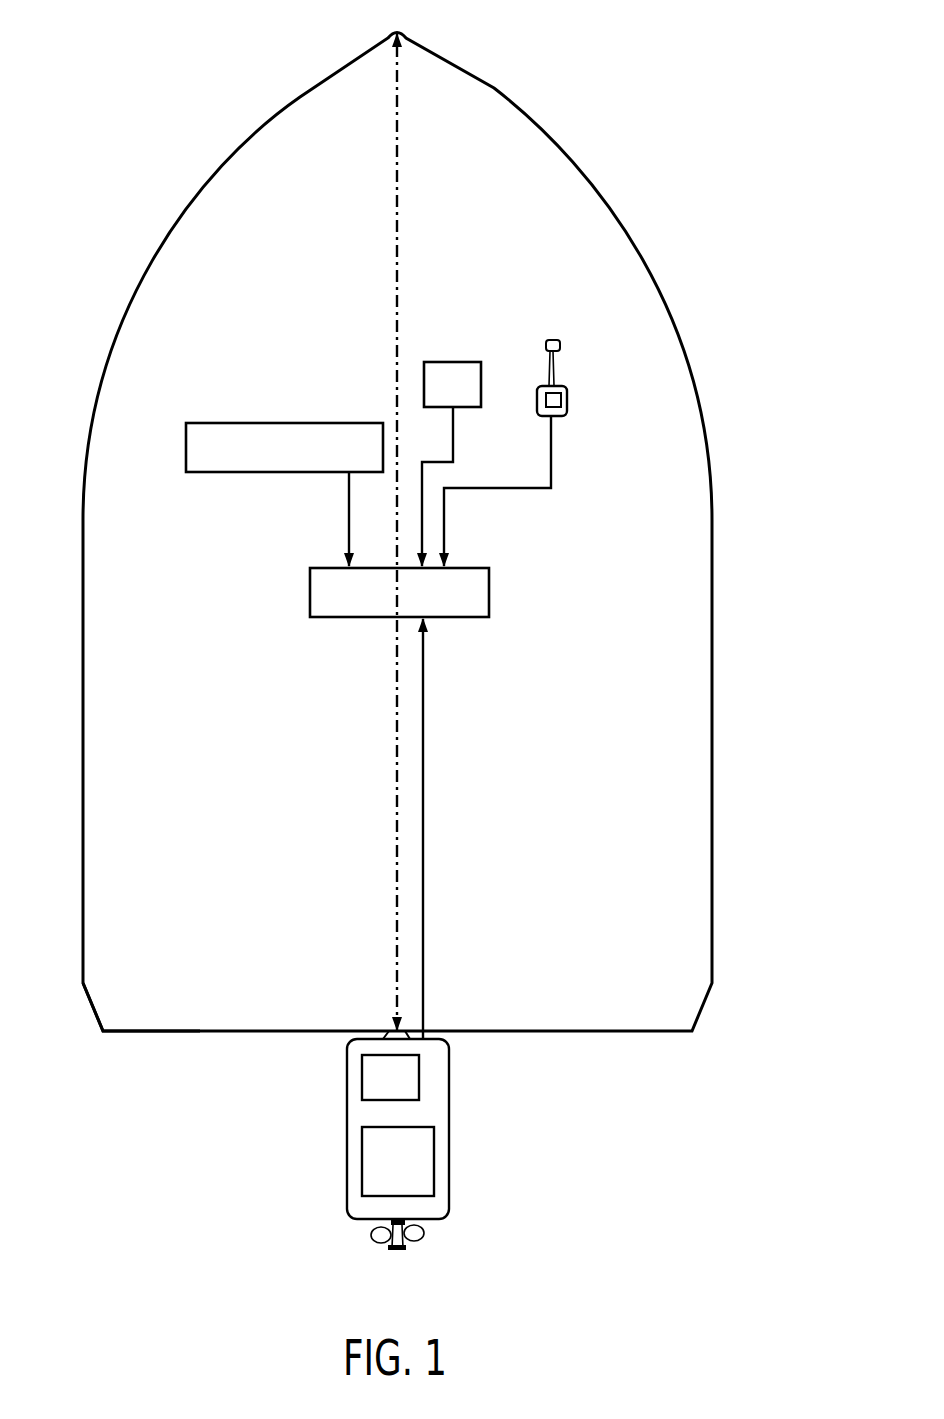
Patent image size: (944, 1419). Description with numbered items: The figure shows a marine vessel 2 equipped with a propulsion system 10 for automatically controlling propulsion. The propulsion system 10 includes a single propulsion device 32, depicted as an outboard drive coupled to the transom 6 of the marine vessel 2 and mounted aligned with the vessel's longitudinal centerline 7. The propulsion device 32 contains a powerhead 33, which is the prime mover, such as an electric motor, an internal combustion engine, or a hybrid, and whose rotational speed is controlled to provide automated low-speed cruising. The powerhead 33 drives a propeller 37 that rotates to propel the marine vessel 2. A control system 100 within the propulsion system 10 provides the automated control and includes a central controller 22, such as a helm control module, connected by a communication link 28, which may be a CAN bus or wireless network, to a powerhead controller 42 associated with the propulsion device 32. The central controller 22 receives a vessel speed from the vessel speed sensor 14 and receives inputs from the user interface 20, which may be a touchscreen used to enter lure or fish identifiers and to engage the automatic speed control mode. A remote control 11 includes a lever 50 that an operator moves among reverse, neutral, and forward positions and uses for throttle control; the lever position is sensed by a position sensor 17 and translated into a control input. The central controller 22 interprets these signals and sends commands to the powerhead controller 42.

The marine vessel 2 is at (487, 90).
The transom 6 is at (138, 1032).
The centerline 7 is at (397, 70).
The propulsion system 10 is at (545, 185).
The remote control 11 is at (534, 417).
The vessel speed sensor 14 is at (208, 423).
The position sensor 17 is at (567, 401).
The user interface 20 is at (453, 362).
The central controller 22 is at (322, 568).
The communication link 28 is at (424, 820).
The propulsion device 32 is at (395, 1125).
The powerhead 33 is at (362, 1160).
The propeller 37 is at (398, 1250).
The powerhead controller 42 is at (362, 1075).
The lever 50 is at (553, 372).
The control system 100 is at (272, 318).